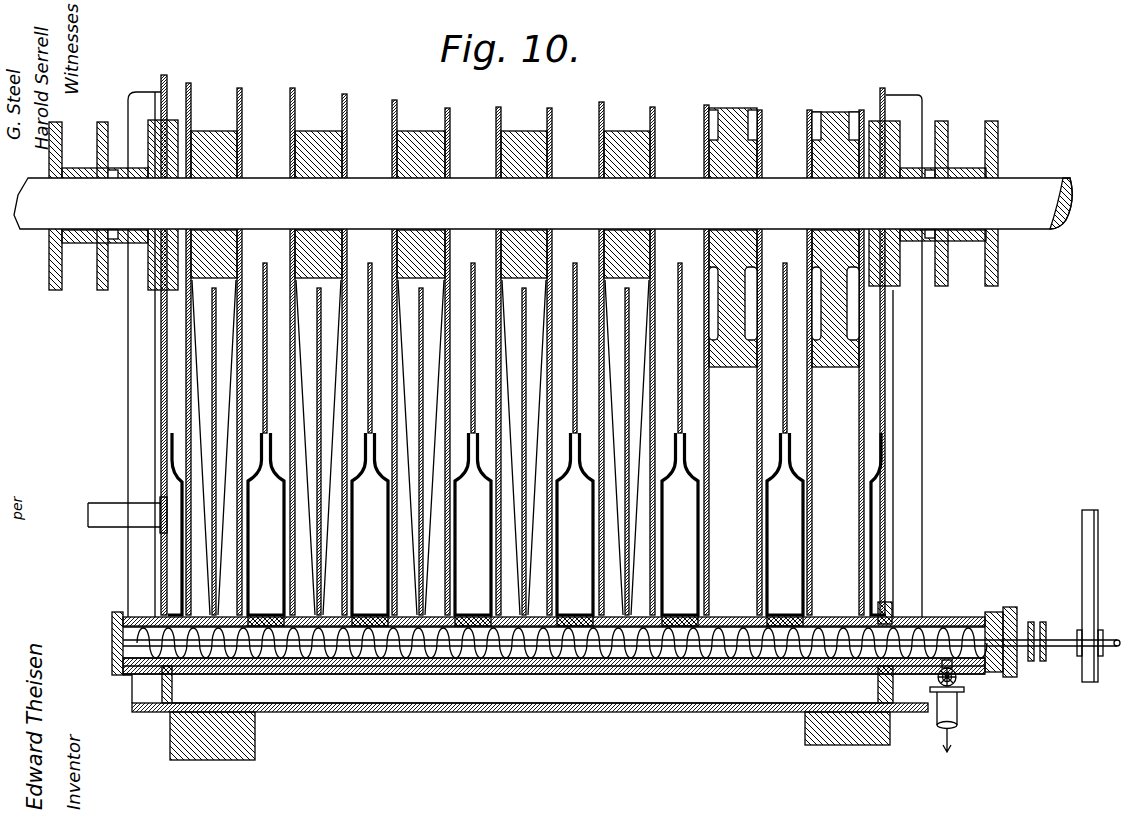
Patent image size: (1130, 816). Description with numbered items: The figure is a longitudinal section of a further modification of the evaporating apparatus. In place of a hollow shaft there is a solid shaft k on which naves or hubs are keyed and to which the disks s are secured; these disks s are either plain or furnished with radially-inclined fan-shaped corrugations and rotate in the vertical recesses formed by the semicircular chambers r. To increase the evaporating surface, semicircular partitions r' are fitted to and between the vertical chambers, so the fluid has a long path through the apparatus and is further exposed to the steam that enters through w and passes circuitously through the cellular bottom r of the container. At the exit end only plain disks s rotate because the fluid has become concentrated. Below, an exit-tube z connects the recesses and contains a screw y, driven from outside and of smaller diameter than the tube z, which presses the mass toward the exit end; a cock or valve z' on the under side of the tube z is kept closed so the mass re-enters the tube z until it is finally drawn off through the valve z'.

The solid shaft k is at (543, 203).
The semicircular chambers r is at (527, 524).
The semicircular partitions r' is at (505, 439).
The disks s is at (522, 447).
The steam inlet w is at (127, 515).
The screw y is at (224, 650).
The exit-tube z is at (621, 601).
The cock or valve z' is at (957, 706).